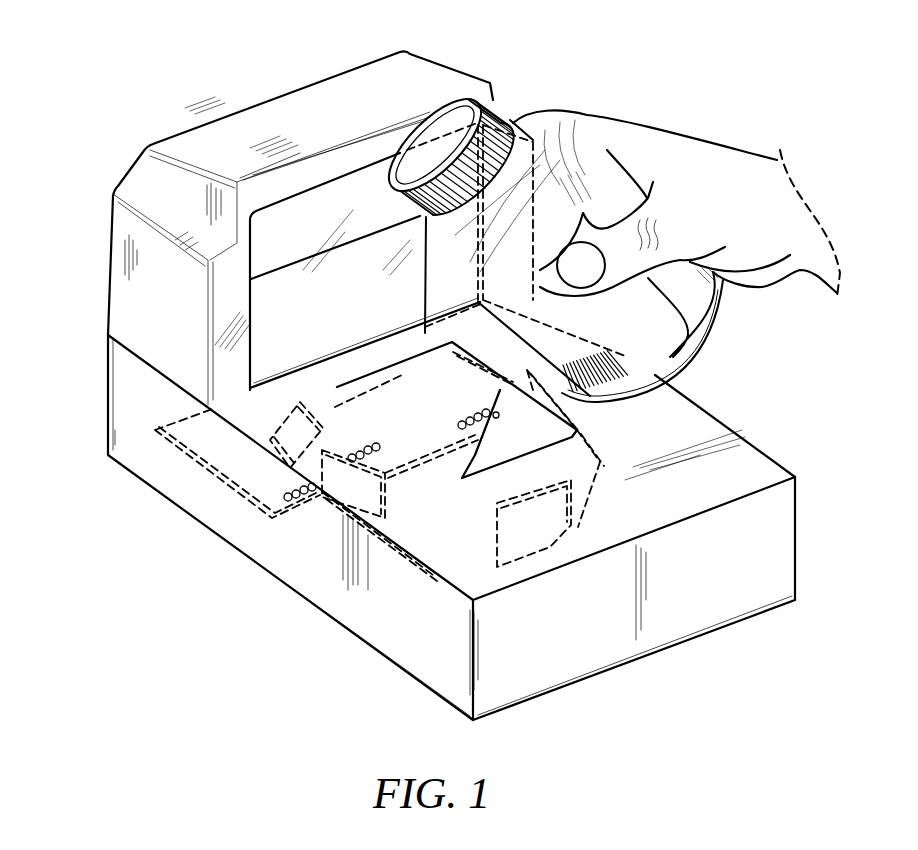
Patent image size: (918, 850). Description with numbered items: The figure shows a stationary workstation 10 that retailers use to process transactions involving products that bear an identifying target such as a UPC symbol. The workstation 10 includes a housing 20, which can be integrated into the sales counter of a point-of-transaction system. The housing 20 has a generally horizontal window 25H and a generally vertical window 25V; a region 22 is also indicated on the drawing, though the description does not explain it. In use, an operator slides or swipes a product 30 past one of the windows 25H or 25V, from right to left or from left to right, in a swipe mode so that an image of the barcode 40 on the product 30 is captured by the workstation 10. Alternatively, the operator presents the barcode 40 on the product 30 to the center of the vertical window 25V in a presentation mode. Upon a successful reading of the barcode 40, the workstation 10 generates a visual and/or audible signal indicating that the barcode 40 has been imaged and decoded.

The workstation 10 is at (184, 42).
The housing 20 is at (190, 147).
The sample tray 22 is at (213, 452).
The generally vertical window 25V is at (268, 292).
The generally horizontal window 25H is at (455, 455).
The product 30 is at (562, 178).
The barcode 40 is at (618, 362).